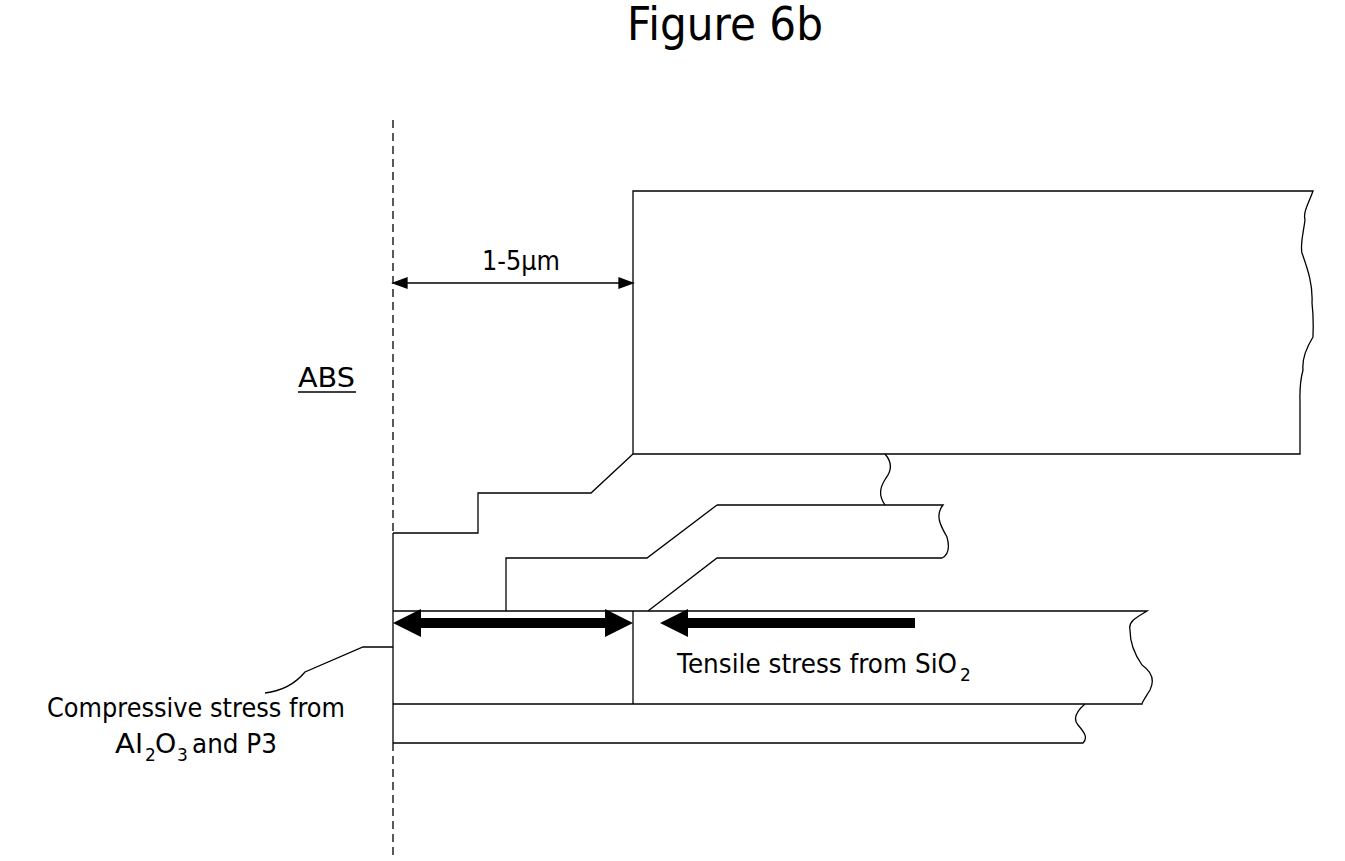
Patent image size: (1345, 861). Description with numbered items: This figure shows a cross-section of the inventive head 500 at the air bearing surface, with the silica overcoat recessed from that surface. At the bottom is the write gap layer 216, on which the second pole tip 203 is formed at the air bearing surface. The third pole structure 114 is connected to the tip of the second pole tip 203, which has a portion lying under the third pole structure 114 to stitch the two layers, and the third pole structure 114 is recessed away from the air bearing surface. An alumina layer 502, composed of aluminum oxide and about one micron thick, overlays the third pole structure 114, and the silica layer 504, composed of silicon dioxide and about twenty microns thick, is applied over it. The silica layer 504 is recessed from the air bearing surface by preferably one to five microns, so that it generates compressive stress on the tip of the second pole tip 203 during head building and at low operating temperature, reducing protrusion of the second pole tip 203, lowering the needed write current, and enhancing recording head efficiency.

The inventive head 500 is at (1188, 117).
The silica layer 504 is at (913, 392).
The alumina layer 502 is at (669, 546).
The pole (P3) structure 114 is at (912, 532).
The second pole tip (P2) 203 is at (576, 702).
The write gap layer 216 is at (987, 717).